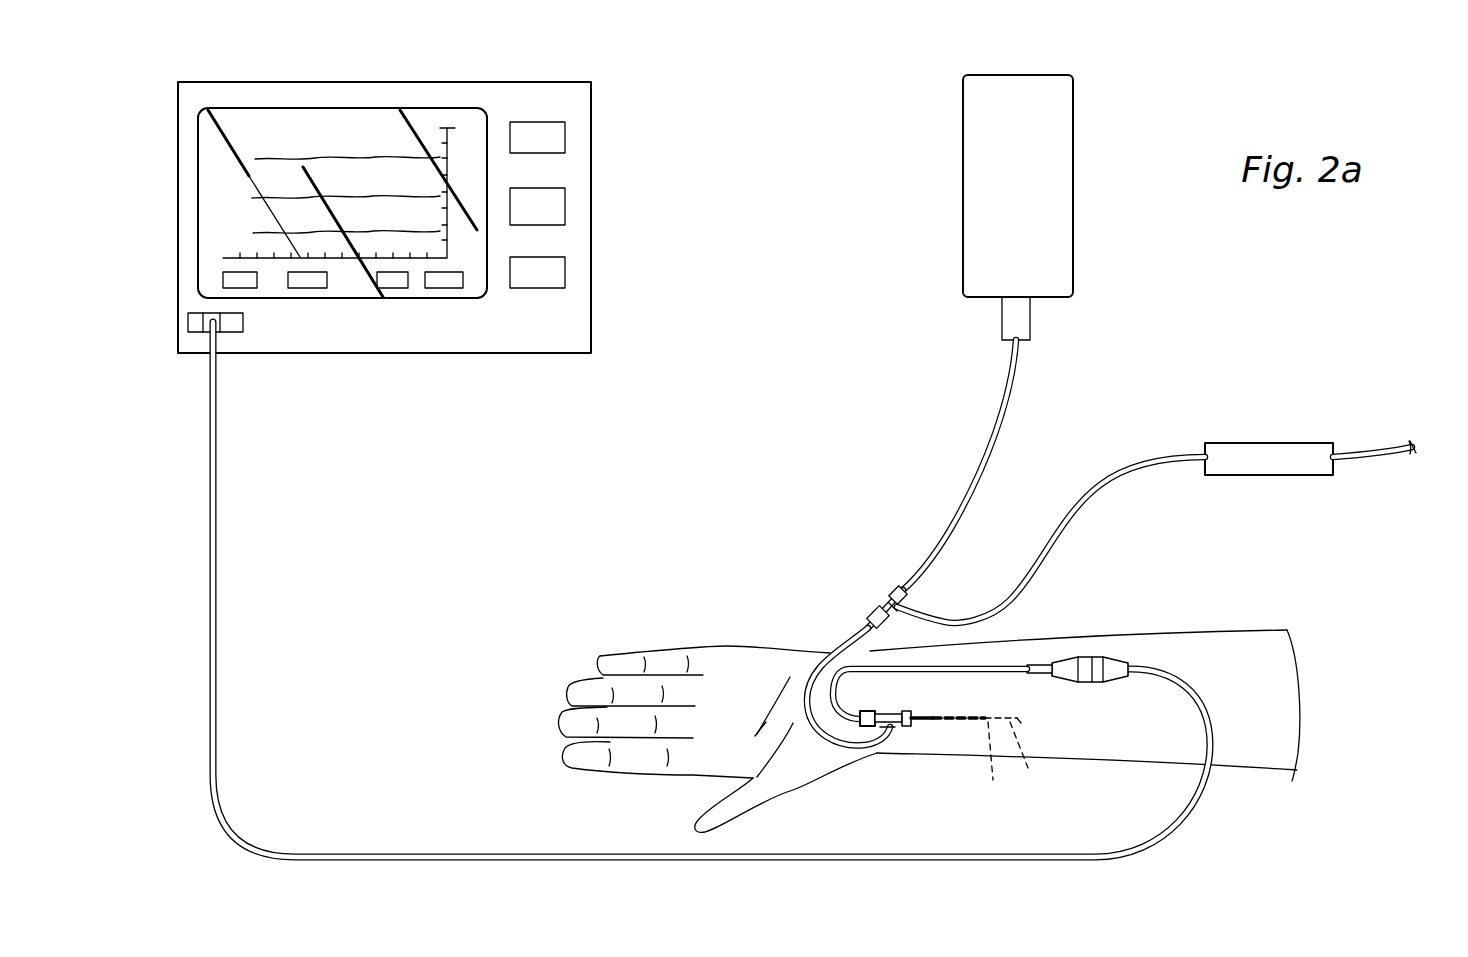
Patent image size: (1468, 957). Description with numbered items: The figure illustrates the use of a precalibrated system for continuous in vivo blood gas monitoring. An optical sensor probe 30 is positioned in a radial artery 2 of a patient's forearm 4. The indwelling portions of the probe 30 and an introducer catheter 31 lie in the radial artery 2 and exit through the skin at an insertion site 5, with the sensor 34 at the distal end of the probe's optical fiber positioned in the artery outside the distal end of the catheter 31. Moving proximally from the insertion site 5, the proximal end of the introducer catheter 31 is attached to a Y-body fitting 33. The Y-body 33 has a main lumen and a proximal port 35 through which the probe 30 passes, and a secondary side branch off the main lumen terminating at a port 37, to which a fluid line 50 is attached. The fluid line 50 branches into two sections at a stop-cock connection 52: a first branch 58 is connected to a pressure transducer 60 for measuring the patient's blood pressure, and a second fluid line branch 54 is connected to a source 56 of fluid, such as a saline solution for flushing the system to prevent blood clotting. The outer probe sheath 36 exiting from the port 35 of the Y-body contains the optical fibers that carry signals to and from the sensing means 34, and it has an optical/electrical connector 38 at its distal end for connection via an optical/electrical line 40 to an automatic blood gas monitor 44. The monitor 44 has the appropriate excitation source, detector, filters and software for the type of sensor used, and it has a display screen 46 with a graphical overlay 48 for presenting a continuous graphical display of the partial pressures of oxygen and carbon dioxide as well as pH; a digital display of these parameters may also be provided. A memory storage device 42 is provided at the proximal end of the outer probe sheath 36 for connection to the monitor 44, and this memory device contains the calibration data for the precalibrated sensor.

The radial artery 2 is at (1024, 757).
The forearm 4 is at (1206, 632).
The insertion site 5 is at (936, 722).
The optical sensor probe 30 is at (925, 727).
The introducer catheter 31 is at (930, 712).
The Y-body fitting 33 is at (878, 714).
The sensor 34 is at (996, 764).
The proximal port 35 is at (862, 711).
The outer probe sheath 36 is at (878, 665).
The port 37 is at (887, 729).
The optical/electrical connector 38 is at (1092, 657).
The optical/electrical line 40 is at (218, 610).
The memory storage device 42 is at (1068, 657).
The automatic blood gas monitor 44 is at (594, 160).
The display screen 46 is at (440, 108).
The graphical overlay 48 is at (448, 138).
The fluid line 50 is at (845, 650).
The stop-cock connection 52 is at (880, 601).
The second fluid line branch 54 is at (1008, 404).
The source of fluid 56 is at (1083, 176).
The first branch 58 is at (1085, 507).
The pressure transducer 60 is at (1272, 442).